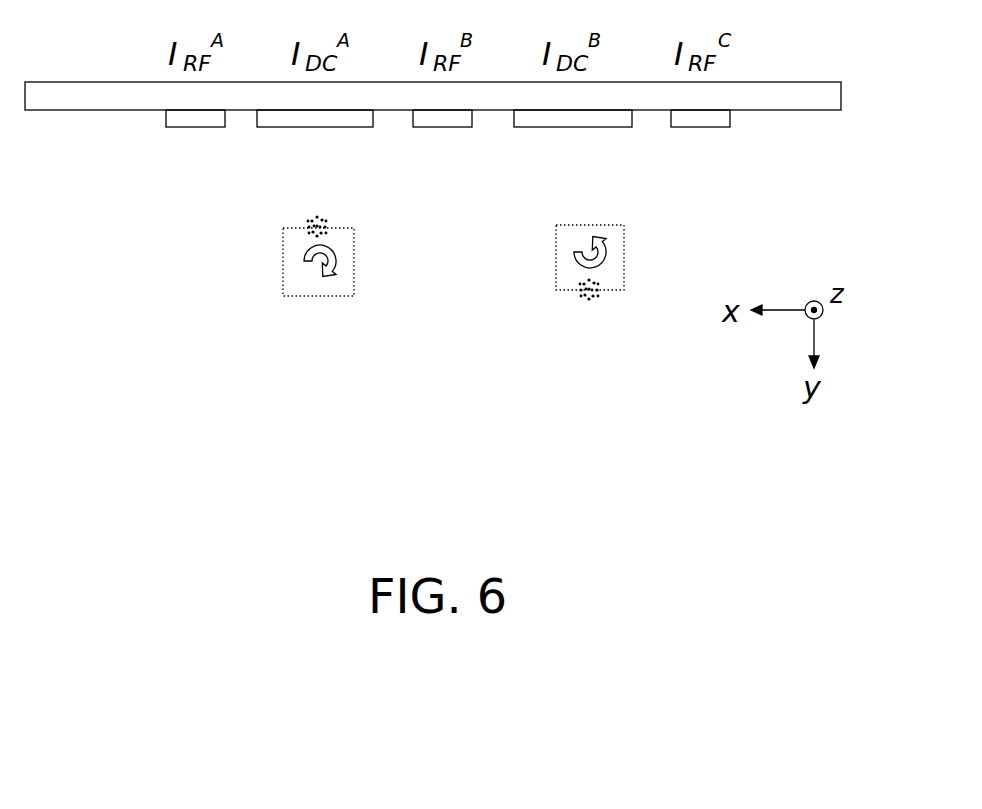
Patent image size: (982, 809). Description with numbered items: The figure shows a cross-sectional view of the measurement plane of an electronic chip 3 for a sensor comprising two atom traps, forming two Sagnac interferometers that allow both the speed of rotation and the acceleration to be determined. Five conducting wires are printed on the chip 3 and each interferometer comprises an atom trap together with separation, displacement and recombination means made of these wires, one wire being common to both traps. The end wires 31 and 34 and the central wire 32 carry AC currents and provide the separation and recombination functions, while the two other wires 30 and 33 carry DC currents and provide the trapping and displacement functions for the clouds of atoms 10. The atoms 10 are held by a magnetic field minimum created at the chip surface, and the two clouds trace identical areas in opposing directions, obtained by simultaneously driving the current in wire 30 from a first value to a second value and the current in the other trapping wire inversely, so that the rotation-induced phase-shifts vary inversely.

The chip 3 is at (88, 82).
The atoms 10 is at (315, 216).
The conducting wire 30 is at (327, 121).
The end wire 31 is at (192, 118).
The central wire 32 is at (449, 117).
The conducting wire 33 is at (585, 121).
The end wire 34 is at (707, 117).